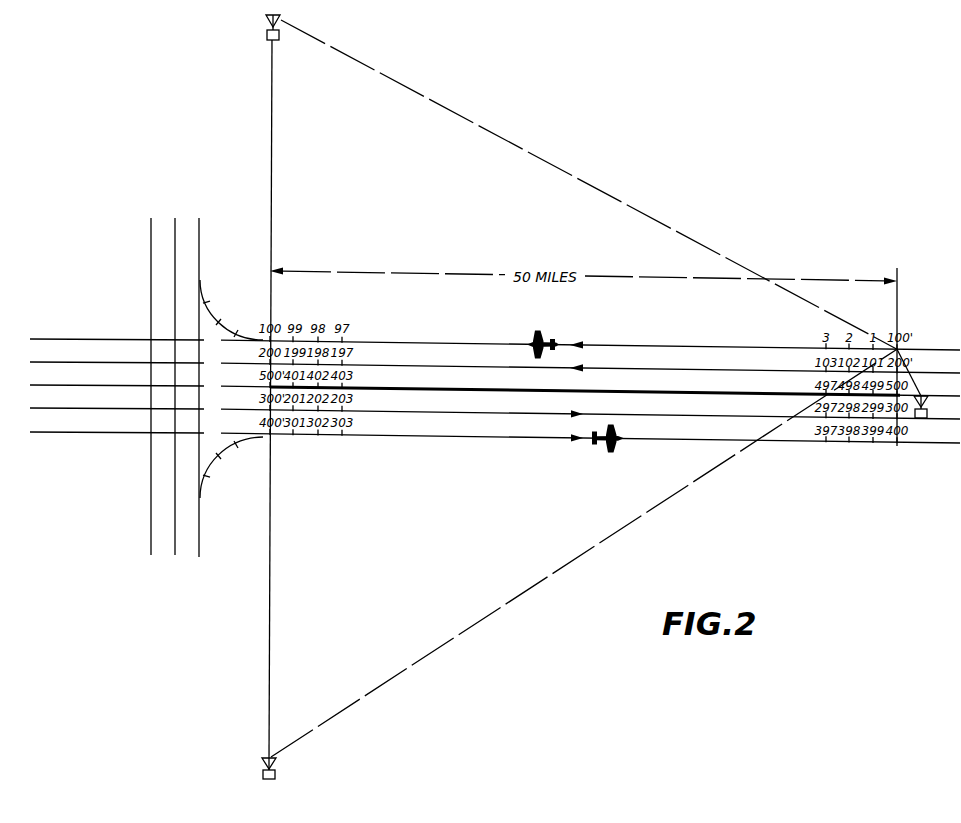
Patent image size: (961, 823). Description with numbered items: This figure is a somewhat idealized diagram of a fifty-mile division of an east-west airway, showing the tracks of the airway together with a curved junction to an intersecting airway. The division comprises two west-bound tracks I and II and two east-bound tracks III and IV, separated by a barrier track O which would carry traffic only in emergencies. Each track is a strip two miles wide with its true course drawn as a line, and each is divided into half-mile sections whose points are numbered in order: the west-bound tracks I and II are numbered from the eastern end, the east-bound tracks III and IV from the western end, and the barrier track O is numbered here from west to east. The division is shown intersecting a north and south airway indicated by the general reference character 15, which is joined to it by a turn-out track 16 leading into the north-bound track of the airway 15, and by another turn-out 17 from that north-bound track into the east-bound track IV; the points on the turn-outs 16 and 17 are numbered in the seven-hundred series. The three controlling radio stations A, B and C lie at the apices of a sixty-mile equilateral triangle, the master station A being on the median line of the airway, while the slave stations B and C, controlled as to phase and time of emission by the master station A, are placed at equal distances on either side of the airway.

The north and south airway 15 is at (165, 239).
The turn-out track 16 is at (213, 312).
The turn-out 17 is at (210, 472).
The master radio station A is at (928, 414).
The slave radio station B is at (266, 36).
The slave radio station C is at (276, 774).
The west-bound track I is at (495, 341).
The west-bound track II is at (495, 364).
The barrier track O is at (495, 387).
The east-bound track III is at (495, 411).
The east-bound track IV is at (495, 435).